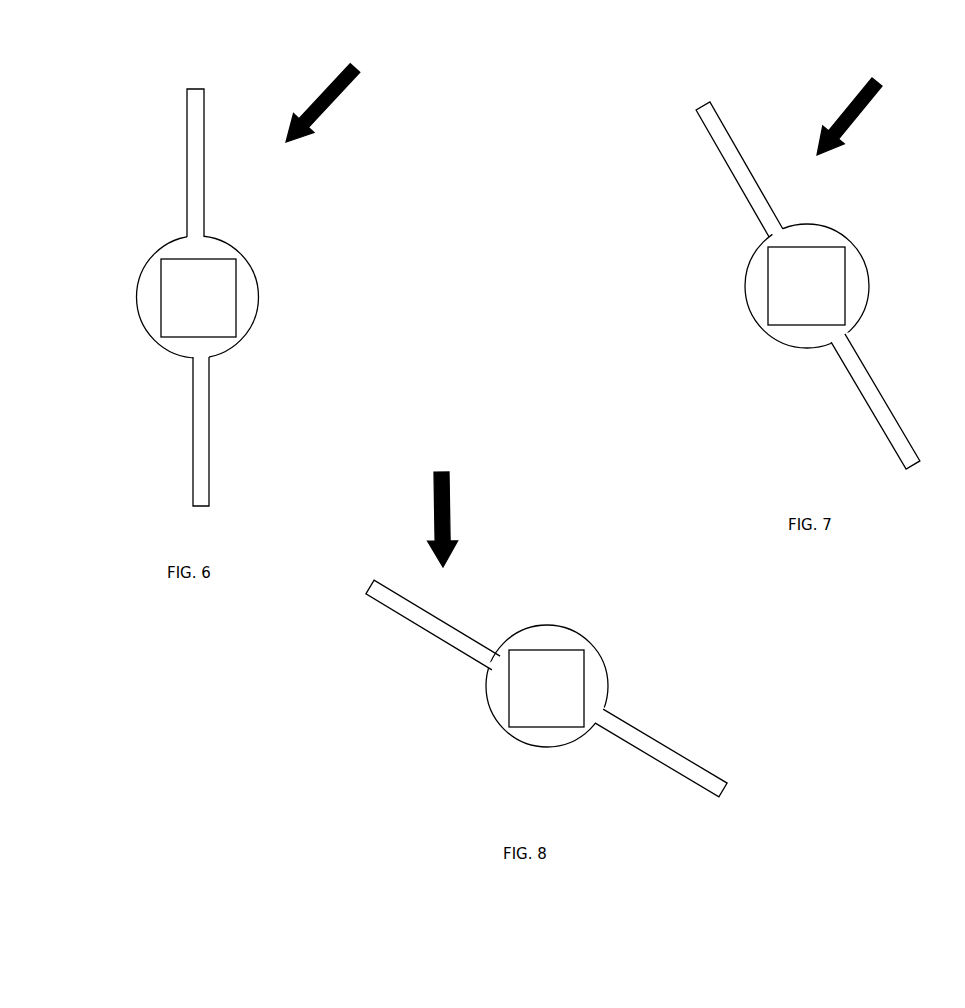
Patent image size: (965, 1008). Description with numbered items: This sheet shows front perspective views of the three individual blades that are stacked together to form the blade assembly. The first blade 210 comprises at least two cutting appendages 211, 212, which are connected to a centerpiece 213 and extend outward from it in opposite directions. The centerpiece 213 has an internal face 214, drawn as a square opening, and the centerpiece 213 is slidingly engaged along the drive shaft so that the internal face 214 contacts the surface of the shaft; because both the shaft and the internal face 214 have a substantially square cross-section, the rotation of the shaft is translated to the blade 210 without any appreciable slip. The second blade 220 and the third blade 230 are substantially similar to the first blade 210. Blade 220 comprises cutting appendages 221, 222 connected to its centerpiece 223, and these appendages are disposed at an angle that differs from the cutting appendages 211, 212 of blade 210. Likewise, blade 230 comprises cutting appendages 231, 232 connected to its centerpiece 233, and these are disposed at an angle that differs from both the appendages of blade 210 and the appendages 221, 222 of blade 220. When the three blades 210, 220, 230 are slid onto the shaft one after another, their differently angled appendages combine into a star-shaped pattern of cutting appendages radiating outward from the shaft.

In FIG. 6, the blade 210 is at (341, 95).
In FIG. 6, the cutting appendage 211 is at (205, 128).
In FIG. 6, the cutting appendage 212 is at (210, 455).
In FIG. 6, the centerpiece 213 is at (258, 287).
In FIG. 6, the internal face 214 is at (180, 337).
In FIG. 7, the internal face 214 is at (790, 325).
In FIG. 8, the internal face 214 is at (530, 727).
In FIG. 7, the blade 220 is at (868, 106).
In FIG. 7, the cutting appendage 221 is at (728, 130).
In FIG. 7, the cutting appendage 222 is at (873, 385).
In FIG. 7, the centerpiece 223 is at (745, 278).
In FIG. 8, the blade 230 is at (443, 506).
In FIG. 8, the cutting appendage 231 is at (432, 634).
In FIG. 8, the cutting appendage 232 is at (638, 728).
In FIG. 8, the centerpiece 233 is at (487, 680).